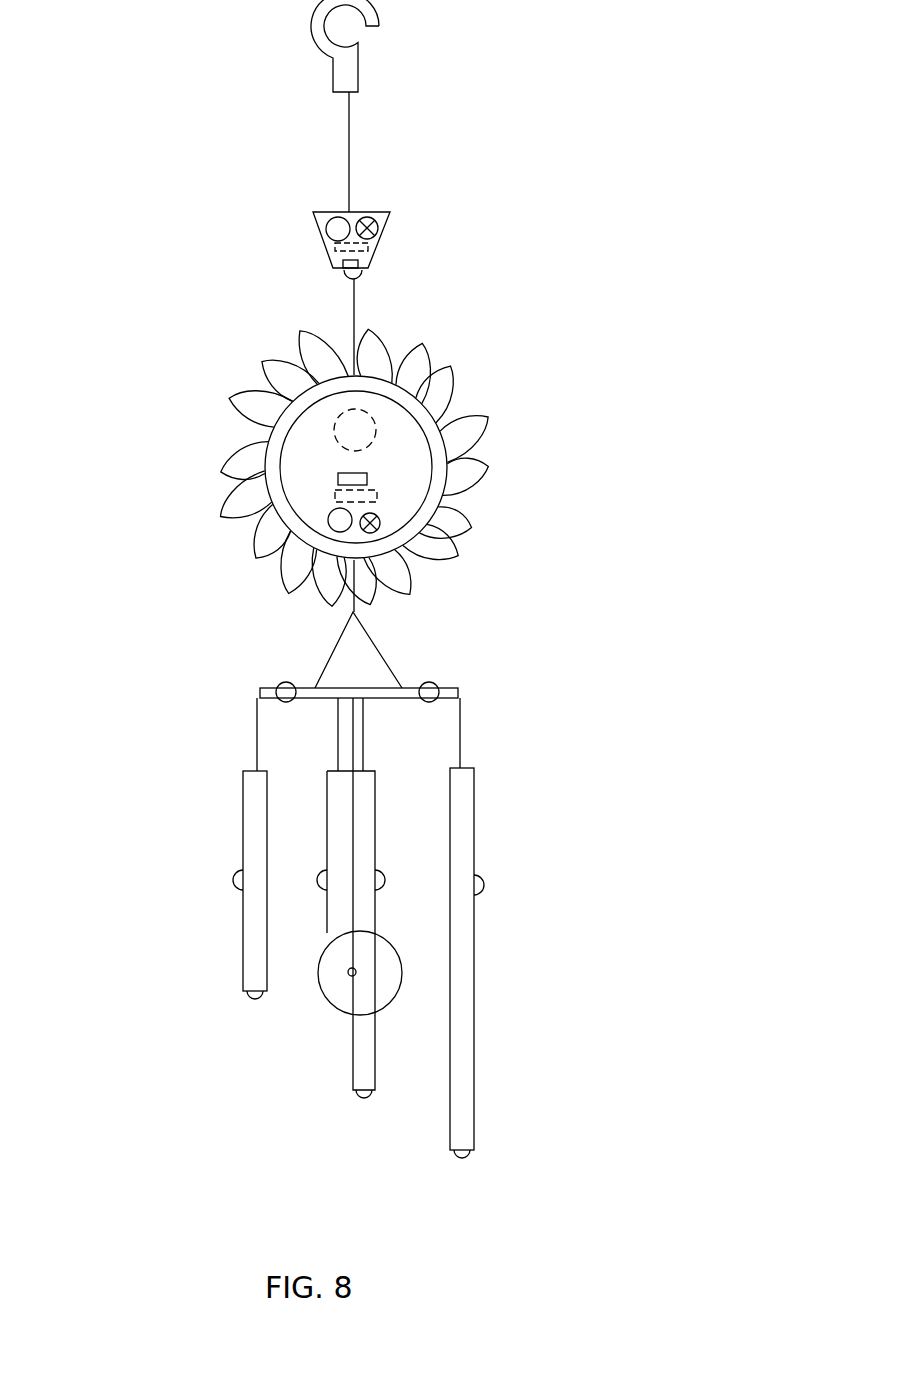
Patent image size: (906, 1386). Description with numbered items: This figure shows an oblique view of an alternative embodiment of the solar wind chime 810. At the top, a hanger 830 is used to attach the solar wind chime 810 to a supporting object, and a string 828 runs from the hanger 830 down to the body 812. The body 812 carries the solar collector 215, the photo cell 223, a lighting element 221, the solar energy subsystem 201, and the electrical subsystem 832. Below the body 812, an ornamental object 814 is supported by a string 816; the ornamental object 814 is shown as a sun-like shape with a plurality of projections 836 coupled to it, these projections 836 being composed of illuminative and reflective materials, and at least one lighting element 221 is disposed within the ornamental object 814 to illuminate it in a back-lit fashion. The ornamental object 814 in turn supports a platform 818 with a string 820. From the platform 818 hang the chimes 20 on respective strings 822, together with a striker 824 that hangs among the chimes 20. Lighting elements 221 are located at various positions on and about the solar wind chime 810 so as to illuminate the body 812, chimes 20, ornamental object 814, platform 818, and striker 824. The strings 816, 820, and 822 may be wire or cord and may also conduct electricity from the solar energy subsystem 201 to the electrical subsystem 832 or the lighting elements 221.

The solar wind chime 810 is at (628, 400).
The body 812 is at (320, 235).
The ornamental object 814 is at (203, 428).
The string 816 is at (353, 305).
The platform 818 is at (262, 692).
The string 820 is at (328, 658).
The strings 822 is at (512, 712).
The striker 824 is at (402, 983).
The string 828 is at (348, 143).
The hanger 830 is at (311, 22).
The electrical subsystem 832 is at (333, 212).
The projections 836 is at (230, 510).
The chimes 20 is at (240, 940).
The solar energy subsystem 201 is at (377, 247).
The solar collector 215 is at (368, 265).
The lighting element 221 is at (343, 278).
The photo cell 223 is at (377, 215).